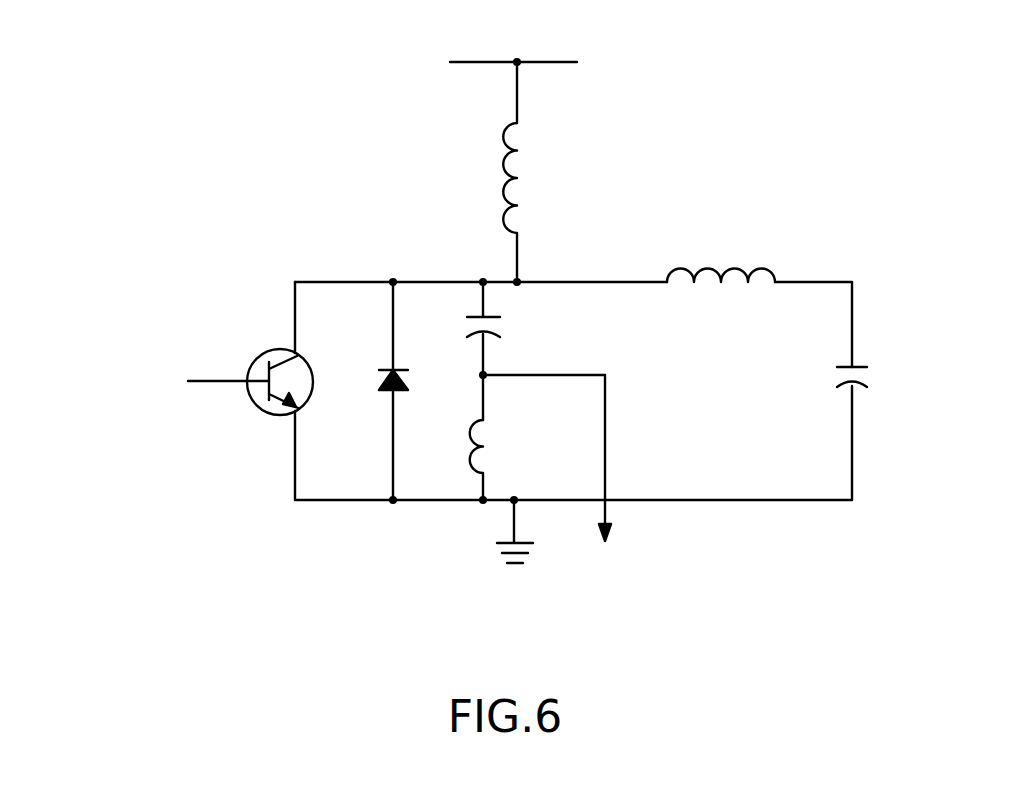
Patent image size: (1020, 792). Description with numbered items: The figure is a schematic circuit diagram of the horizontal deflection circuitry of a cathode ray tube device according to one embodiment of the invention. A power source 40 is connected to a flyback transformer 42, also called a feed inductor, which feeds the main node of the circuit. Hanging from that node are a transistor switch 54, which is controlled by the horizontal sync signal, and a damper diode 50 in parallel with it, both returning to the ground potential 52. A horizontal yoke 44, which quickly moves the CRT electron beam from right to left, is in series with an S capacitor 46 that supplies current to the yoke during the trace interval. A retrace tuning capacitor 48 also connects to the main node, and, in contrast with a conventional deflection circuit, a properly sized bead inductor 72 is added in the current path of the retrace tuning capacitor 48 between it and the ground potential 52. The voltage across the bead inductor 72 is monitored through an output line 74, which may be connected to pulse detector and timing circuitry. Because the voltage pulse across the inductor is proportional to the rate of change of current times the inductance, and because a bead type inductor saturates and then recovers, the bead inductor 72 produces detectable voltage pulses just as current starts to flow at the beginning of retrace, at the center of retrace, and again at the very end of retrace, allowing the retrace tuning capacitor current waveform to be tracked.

The power source 40 is at (477, 63).
The flyback transformer 42 is at (502, 150).
The horizontal yoke 44 is at (742, 265).
The S capacitor 46 is at (843, 383).
The retrace tuning capacitor 48 is at (495, 315).
The damper diode 50 is at (393, 392).
The ground potential 52 is at (514, 567).
The transistor switch 54 is at (257, 405).
The bead inductor 72 is at (483, 470).
The output line 74 is at (607, 521).